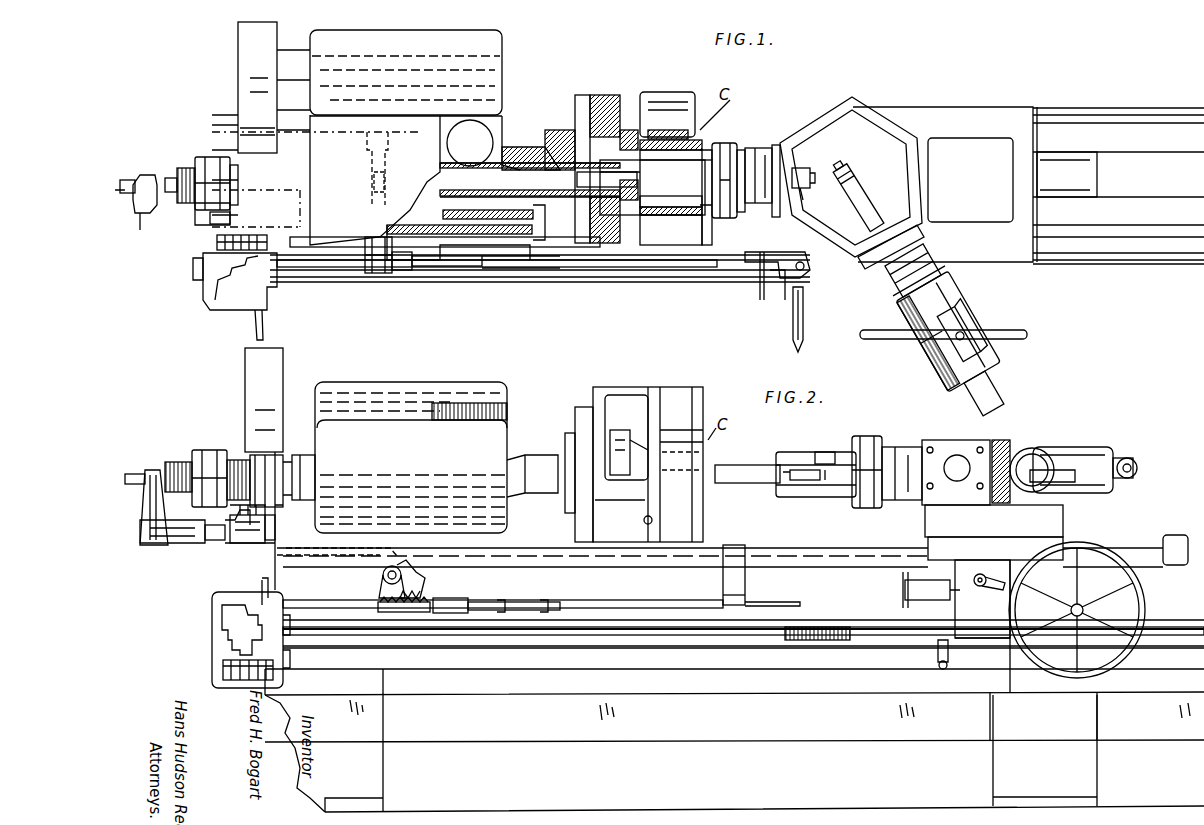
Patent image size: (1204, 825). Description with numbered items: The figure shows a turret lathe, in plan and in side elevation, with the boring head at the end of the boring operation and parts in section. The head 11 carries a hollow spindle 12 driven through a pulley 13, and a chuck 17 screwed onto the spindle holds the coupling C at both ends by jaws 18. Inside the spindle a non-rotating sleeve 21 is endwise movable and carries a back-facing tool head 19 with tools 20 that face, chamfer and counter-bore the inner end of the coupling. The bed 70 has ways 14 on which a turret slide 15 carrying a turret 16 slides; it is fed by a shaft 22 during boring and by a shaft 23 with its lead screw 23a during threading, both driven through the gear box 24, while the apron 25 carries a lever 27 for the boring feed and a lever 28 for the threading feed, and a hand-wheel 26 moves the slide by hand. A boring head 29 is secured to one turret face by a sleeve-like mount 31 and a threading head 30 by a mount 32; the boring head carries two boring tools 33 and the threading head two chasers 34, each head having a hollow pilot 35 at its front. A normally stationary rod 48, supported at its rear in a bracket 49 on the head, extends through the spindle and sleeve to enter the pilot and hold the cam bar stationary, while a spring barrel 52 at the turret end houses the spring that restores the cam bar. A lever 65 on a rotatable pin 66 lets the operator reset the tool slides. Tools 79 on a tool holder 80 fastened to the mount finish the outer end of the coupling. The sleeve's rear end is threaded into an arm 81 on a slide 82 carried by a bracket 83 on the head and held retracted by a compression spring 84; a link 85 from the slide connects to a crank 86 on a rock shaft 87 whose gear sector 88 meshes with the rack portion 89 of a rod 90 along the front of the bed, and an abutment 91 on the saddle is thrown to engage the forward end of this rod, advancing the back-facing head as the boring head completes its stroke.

In FIG. 1, the head 11 is at (490, 72).
In FIG. 2, the head 11 is at (408, 392).
In FIG. 1, the hollow spindle 12 is at (525, 150).
In FIG. 2, the hollow spindle 12 is at (563, 448).
In FIG. 1, the pulley 13 is at (250, 65).
In FIG. 2, the pulley 13 is at (272, 362).
In FIG. 1, the ways 14 is at (1110, 125).
In FIG. 1, the turret slide 15 is at (930, 120).
In FIG. 2, the turret slide 15 is at (1137, 545).
In FIG. 1, the turret 16 is at (878, 115).
In FIG. 2, the turret 16 is at (972, 440).
In FIG. 1, the chuck 17 is at (665, 98).
In FIG. 2, the chuck 17 is at (620, 392).
In FIG. 1, the jaws 18 is at (665, 245).
In FIG. 1, the back-facing tool head 19 is at (630, 138).
In FIG. 1, the tools 20 is at (632, 125).
In FIG. 2, the tools 20 is at (635, 455).
In FIG. 1, the non-rotating sleeve 21 is at (556, 148).
In FIG. 1, the shaft 22 is at (318, 262).
In FIG. 2, the shaft 22 is at (478, 628).
In FIG. 1, the shaft 23 is at (605, 270).
In FIG. 2, the shaft 23 is at (505, 652).
In FIG. 1, the lead screw 23a is at (778, 292).
In FIG. 2, the lead screw 23a is at (812, 645).
In FIG. 1, the gear box 24 is at (218, 298).
In FIG. 2, the gear box 24 is at (218, 652).
In FIG. 2, the apron 25 is at (983, 650).
In FIG. 1, the hand-wheel 26 is at (1027, 334).
In FIG. 2, the hand-wheel 26 is at (1130, 650).
In FIG. 2, the lever 27 is at (1000, 588).
In FIG. 1, the lever 28 is at (805, 326).
In FIG. 2, the lever 28 is at (942, 664).
In FIG. 1, the boring head 29 is at (645, 210).
In FIG. 2, the boring head 29 is at (808, 490).
In FIG. 1, the threading head 30 is at (925, 332).
In FIG. 2, the threading head 30 is at (1085, 455).
In FIG. 1, the sleeve-like mount 31 is at (758, 160).
In FIG. 2, the sleeve-like mount 31 is at (900, 455).
In FIG. 1, the mount 32 is at (915, 240).
In FIG. 2, the mount 32 is at (1005, 445).
In FIG. 1, the boring tools 33 is at (668, 176).
In FIG. 2, the boring tools 33 is at (815, 470).
In FIG. 1, the chasers 34 is at (960, 300).
In FIG. 2, the chasers 34 is at (1060, 455).
In FIG. 1, the hollow pilot 35 is at (580, 215).
In FIG. 2, the hollow pilot 35 is at (740, 475).
In FIG. 1, the rod 48 is at (473, 170).
In FIG. 1, the bracket 49 is at (145, 212).
In FIG. 2, the bracket 49 is at (152, 545).
In FIG. 1, the spring barrel 52 is at (850, 196).
In FIG. 1, the lever 65 is at (905, 318).
In FIG. 1, the rotatable pin 66 is at (962, 325).
In FIG. 2, the bed 70 is at (612, 660).
In FIG. 1, the tools 79 is at (690, 140).
In FIG. 2, the tools 79 is at (630, 450).
In FIG. 1, the tool holder 80 is at (727, 143).
In FIG. 2, the tool holder 80 is at (866, 436).
In FIG. 1, the arm 81 is at (212, 165).
In FIG. 2, the arm 81 is at (210, 465).
In FIG. 1, the slide 82 is at (182, 205).
In FIG. 2, the slide 82 is at (185, 543).
In FIG. 2, the bracket 83 is at (228, 540).
In FIG. 2, the compression spring 84 is at (262, 522).
In FIG. 1, the link 85 is at (316, 179).
In FIG. 2, the link 85 is at (258, 548).
In FIG. 1, the crank 86 is at (388, 180).
In FIG. 2, the crank 86 is at (385, 560).
In FIG. 1, the rock shaft 87 is at (388, 165).
In FIG. 2, the rock shaft 87 is at (383, 576).
In FIG. 1, the gear sector 88 is at (368, 273).
In FIG. 2, the gear sector 88 is at (415, 580).
In FIG. 1, the rack portion 89 is at (400, 270).
In FIG. 2, the rack portion 89 is at (426, 603).
In FIG. 1, the rod 90 is at (555, 258).
In FIG. 2, the rod 90 is at (622, 610).
In FIG. 1, the abutment 91 is at (750, 278).
In FIG. 2, the abutment 91 is at (904, 592).